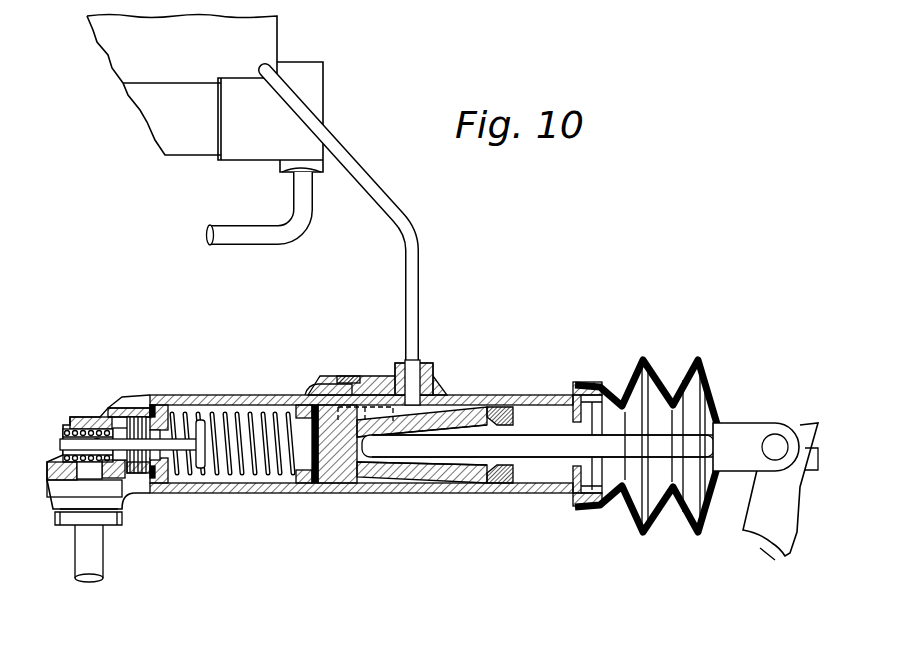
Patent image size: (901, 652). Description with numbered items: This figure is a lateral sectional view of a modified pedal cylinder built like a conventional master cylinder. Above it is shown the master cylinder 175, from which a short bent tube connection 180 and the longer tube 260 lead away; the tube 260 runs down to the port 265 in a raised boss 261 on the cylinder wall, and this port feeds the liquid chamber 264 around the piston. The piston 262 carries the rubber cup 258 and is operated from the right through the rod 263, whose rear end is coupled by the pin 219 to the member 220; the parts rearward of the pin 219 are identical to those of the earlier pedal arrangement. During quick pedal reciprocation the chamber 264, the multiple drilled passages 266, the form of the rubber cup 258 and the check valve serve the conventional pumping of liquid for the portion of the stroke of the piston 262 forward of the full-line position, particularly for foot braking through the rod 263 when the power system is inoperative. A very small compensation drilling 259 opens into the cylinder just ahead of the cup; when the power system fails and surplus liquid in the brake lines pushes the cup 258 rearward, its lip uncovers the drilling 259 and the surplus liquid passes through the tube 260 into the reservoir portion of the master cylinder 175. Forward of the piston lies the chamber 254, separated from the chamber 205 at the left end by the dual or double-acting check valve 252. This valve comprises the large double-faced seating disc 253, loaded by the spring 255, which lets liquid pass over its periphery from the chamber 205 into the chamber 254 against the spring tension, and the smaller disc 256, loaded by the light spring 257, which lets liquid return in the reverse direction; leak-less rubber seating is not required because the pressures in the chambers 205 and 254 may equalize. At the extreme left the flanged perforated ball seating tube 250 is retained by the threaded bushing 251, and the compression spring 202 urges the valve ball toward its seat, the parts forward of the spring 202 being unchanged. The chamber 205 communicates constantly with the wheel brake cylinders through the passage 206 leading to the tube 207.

The mounting block 175 is at (137, 92).
The fluid line 180 is at (240, 238).
The tube 260 is at (421, 257).
The boss 261 is at (459, 388).
The port 265 is at (392, 378).
The compensation drilling 259 is at (320, 384).
The chamber 254 is at (263, 396).
The large double-faced seating disc 253 is at (148, 404).
The threaded bushing 251 is at (128, 418).
The chamber 205 is at (88, 417).
The flanged perforated ball seating tube 250 is at (65, 440).
The passage 206 is at (93, 470).
The compression spring 202 is at (112, 478).
The tube 207 is at (92, 573).
The dual or double-acting check-valve 252 is at (187, 428).
The spring 255 is at (238, 474).
The smaller disc 256 is at (140, 474).
The light spring 257 is at (201, 456).
The rubber cup 258 is at (307, 480).
The piston 262 is at (349, 472).
The multiple drilled passages 266 is at (353, 473).
The rod 263 is at (437, 447).
The liquid chamber 264 is at (462, 478).
The pin 219 is at (776, 442).
The bracket 220 is at (784, 535).